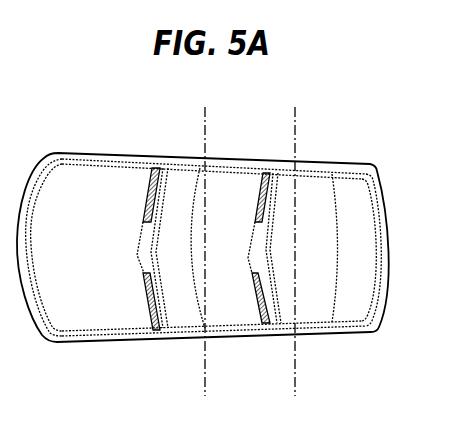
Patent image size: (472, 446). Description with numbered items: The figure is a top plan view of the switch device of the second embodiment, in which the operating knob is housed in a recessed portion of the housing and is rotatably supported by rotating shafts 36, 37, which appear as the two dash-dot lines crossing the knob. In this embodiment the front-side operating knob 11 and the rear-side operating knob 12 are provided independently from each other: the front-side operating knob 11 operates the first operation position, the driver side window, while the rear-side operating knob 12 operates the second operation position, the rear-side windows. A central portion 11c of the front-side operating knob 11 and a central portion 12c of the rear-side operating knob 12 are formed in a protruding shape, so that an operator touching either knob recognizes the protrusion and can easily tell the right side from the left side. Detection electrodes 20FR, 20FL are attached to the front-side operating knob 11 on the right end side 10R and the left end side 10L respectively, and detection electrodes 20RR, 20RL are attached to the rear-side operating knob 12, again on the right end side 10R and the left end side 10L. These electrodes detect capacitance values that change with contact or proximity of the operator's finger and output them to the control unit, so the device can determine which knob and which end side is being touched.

The rotating shaft 36 is at (204, 125).
The rotating shaft 37 is at (296, 123).
The right end side 10R is at (152, 166).
The left end side 10L is at (155, 322).
The detection electrode 20FR is at (148, 195).
The detection electrode 20FL is at (146, 302).
The detection electrode 20RR is at (267, 172).
The detection electrode 20RL is at (263, 325).
The central portion 11c is at (137, 253).
The central portion 12c is at (248, 250).
The front-side operating knob 11 is at (187, 310).
The rear-side operating knob 12 is at (307, 310).